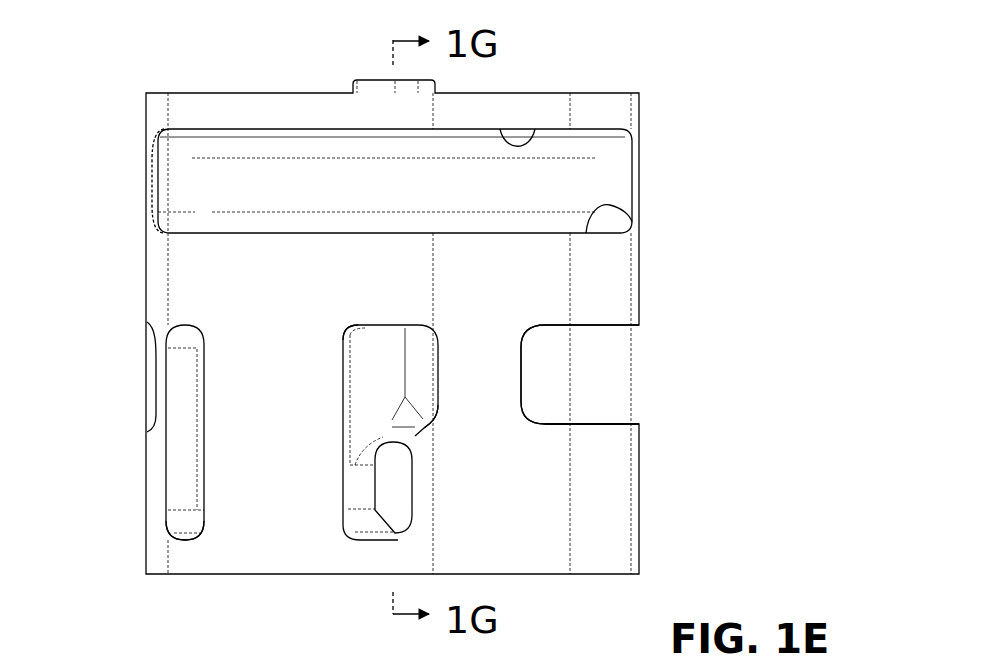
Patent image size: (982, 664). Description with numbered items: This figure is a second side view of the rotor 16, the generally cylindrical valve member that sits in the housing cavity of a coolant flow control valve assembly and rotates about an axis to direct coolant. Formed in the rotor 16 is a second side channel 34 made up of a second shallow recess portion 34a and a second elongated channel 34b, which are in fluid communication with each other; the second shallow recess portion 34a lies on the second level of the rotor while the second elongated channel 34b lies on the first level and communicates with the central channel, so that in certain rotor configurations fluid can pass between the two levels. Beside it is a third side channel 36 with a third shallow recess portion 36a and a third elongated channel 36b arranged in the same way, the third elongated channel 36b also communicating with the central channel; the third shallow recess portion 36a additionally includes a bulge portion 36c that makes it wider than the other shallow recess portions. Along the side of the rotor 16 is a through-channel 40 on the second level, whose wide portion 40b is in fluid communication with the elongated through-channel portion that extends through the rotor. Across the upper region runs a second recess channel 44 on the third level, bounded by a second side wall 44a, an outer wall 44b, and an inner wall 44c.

The rotor 16 is at (108, 103).
The second side channel 34 is at (172, 467).
The second shallow recess portion 34a is at (176, 354).
The second elongated channel 34b is at (175, 525).
The third side channel 36 is at (336, 346).
The third shallow recess portion 36a is at (367, 350).
The third elongated channel 36b is at (355, 517).
The bulge portion 36c is at (420, 370).
The through-channel 40 is at (633, 349).
The wide portion 40b is at (590, 424).
The second recess channel 44 is at (614, 170).
The second side wall 44a is at (164, 165).
The outer wall 44b is at (520, 148).
The inner wall 44c is at (598, 220).